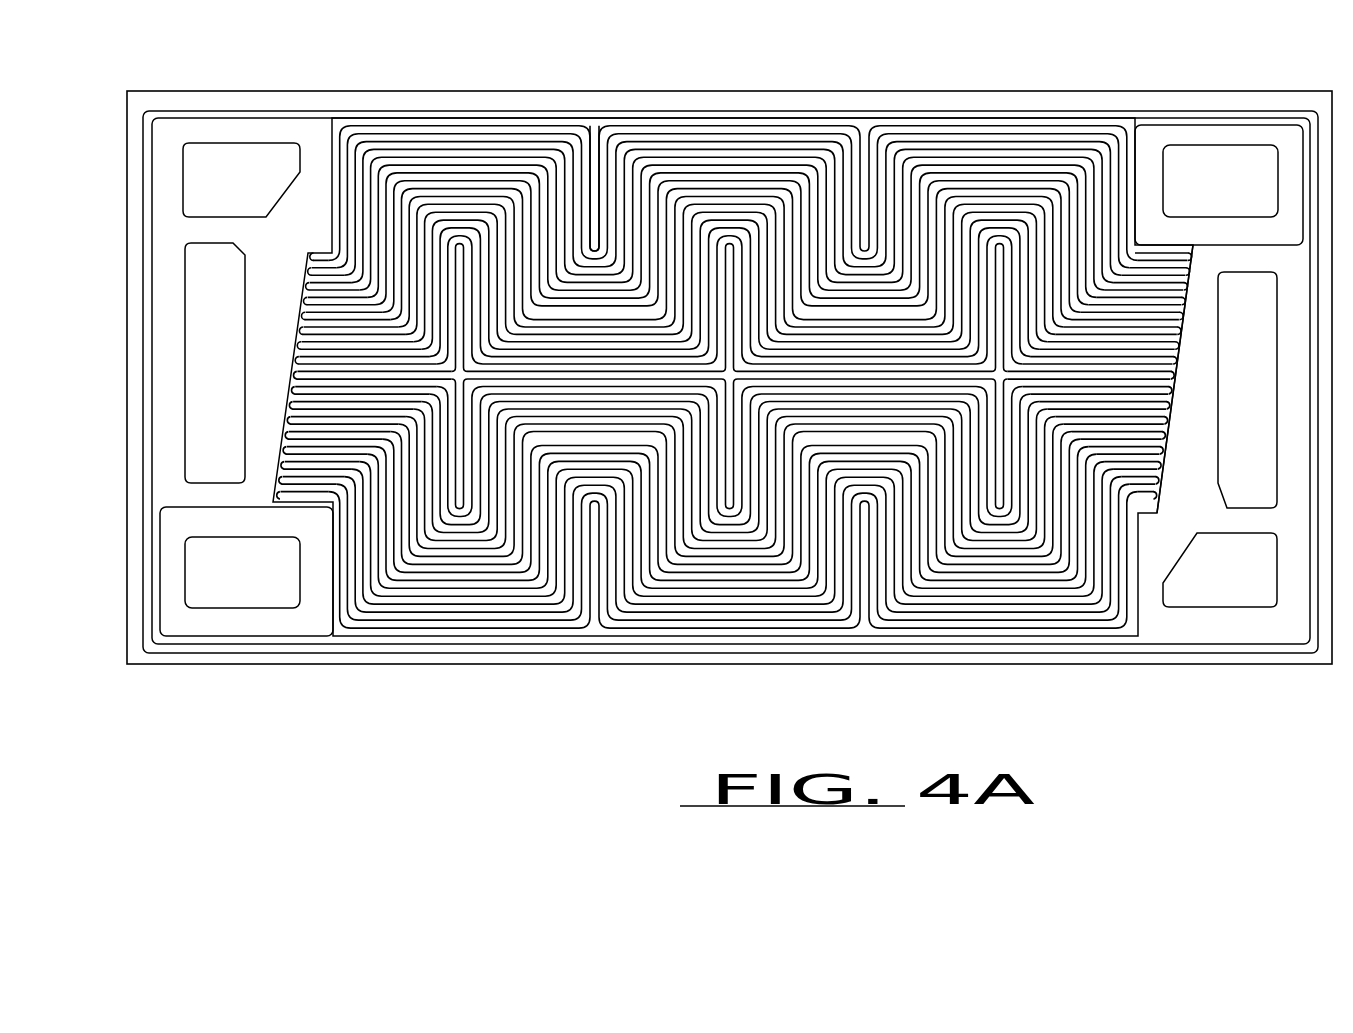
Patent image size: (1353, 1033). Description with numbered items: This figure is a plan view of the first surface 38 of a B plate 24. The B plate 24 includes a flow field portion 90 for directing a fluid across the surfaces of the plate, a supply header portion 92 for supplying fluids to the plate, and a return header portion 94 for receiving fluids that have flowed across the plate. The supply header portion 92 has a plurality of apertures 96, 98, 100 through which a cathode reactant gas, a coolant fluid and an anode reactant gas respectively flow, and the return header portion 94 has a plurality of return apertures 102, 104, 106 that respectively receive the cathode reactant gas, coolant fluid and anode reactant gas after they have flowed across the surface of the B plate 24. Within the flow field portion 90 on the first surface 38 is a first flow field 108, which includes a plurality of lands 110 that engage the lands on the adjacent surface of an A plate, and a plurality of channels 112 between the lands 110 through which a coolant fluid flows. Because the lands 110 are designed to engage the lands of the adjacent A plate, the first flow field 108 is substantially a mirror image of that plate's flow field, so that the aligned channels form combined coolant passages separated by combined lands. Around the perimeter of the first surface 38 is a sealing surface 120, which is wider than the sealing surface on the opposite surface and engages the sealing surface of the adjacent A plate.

The B plate 24 is at (1202, 700).
The first surface 38 is at (1072, 712).
The flow field portion 90 is at (865, 69).
The supply header portion 92 is at (1213, 70).
The return header portion 94 is at (237, 72).
The aperture 96 is at (1253, 458).
The aperture 98 is at (1205, 578).
The aperture 100 is at (1260, 162).
The return aperture 102 is at (223, 287).
The return aperture 104 is at (283, 158).
The return aperture 106 is at (240, 597).
The first flow field 108 is at (718, 162).
The lands 110 is at (566, 128).
The channels 112 is at (436, 133).
The perimeter sealing surface 120 is at (1323, 314).